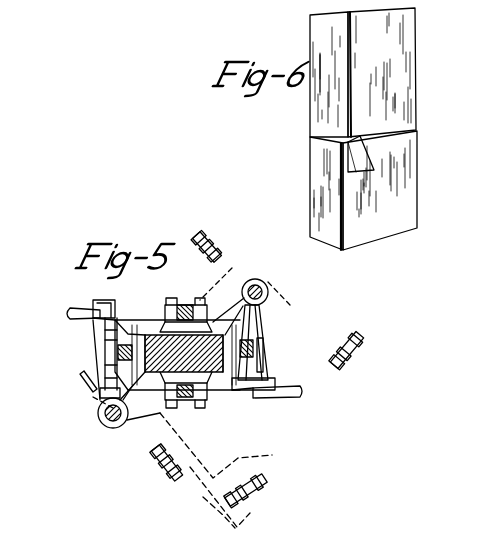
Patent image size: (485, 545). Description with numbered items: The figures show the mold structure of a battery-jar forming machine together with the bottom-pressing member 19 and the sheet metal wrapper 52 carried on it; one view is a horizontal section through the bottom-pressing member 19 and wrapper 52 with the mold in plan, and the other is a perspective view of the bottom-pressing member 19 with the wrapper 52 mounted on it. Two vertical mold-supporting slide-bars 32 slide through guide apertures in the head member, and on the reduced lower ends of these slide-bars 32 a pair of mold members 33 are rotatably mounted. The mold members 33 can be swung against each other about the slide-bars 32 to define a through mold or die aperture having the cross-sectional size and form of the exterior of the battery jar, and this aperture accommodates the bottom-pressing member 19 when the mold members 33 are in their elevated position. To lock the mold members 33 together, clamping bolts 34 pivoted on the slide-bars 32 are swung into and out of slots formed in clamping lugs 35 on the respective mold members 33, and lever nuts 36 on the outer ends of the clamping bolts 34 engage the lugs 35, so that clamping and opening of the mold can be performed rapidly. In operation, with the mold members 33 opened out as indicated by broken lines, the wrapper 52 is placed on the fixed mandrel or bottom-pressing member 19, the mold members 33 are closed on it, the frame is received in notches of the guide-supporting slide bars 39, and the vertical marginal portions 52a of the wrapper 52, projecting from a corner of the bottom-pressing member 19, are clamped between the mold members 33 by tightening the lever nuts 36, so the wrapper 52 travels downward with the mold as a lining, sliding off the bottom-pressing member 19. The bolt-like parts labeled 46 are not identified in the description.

In FIG. 6, the bottom-pressing member 19 is at (398, 78).
In FIG. 5, the bottom-pressing member 19 is at (225, 348).
In FIG. 5, the mold-supporting slide-bars 32 is at (107, 428).
In FIG. 5, the mold members 33 is at (152, 332).
In FIG. 5, the clamping bolts 34 is at (105, 352).
In FIG. 5, the clamping lugs 35 is at (118, 322).
In FIG. 5, the lever nuts 36 is at (70, 311).
In FIG. 5, the guide-supporting slide bars 39 is at (213, 310).
In FIG. 5, the clamp block 46 is at (183, 305).
In FIG. 6, the sheet metal wrapper 52 is at (392, 148).
In FIG. 5, the sheet metal wrapper 52 is at (222, 262).
In FIG. 5, the vertical marginal portions of the wrapper 52a is at (100, 404).